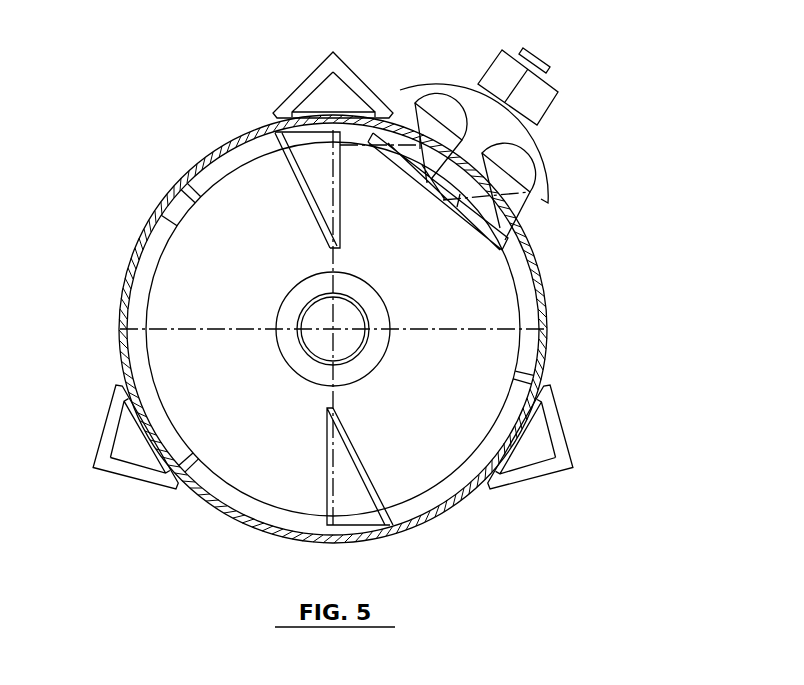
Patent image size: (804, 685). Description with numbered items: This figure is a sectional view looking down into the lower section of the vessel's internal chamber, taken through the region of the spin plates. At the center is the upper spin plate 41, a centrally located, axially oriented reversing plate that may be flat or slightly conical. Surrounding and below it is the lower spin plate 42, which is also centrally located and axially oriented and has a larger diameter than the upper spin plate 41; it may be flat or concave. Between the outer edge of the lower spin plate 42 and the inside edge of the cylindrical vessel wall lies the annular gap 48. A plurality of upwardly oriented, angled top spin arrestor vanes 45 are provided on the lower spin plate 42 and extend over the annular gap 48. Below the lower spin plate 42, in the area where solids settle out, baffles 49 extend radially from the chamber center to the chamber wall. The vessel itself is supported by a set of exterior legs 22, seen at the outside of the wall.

The exterior legs 22 is at (362, 87).
The upper spin plate 41 is at (348, 315).
The lower spin plate 42 is at (483, 283).
The spin arrestor vanes 45 is at (305, 173).
The annular gap 48 is at (235, 158).
The baffles 49 is at (180, 209).